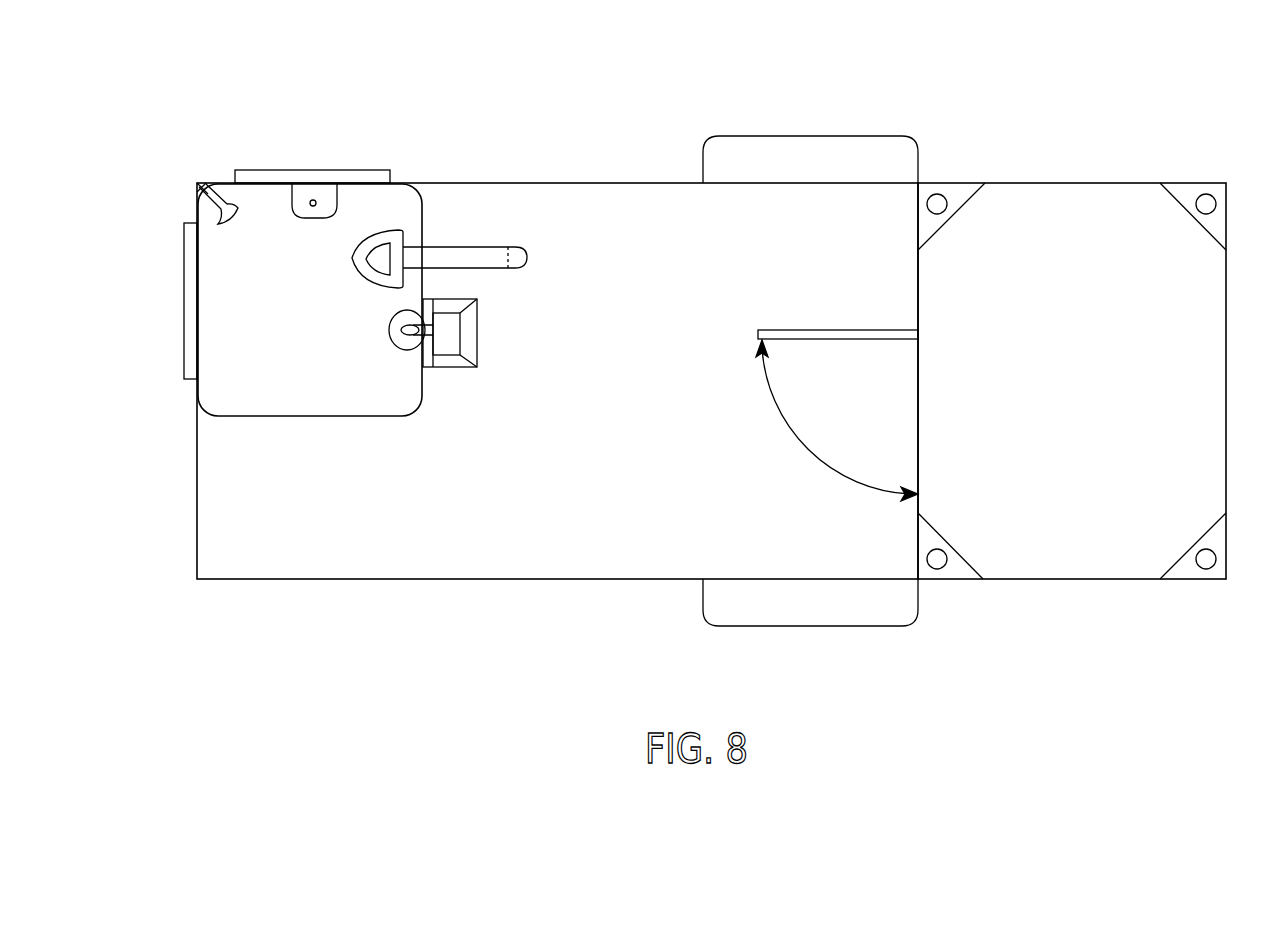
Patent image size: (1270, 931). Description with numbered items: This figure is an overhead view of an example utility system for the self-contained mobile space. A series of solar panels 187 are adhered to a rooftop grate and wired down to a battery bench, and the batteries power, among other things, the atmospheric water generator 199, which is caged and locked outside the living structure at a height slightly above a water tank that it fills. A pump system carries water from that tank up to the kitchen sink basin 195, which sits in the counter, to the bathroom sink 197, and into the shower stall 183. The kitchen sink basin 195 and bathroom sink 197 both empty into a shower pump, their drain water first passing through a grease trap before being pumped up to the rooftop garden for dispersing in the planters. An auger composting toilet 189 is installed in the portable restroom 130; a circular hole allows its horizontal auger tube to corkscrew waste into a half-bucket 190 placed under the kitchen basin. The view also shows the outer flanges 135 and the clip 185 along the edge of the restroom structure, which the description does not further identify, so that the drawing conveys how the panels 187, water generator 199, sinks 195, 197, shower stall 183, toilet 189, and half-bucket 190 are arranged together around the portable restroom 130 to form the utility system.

The portable restroom 130 is at (213, 183).
The flange 135 is at (803, 136).
The shower stall 183 is at (197, 183).
The clip 185 is at (298, 195).
The panels 187 is at (360, 175).
The auger composting toilet 189 is at (355, 272).
The half-bucket 190 is at (527, 257).
The kitchen sink basin 195 is at (477, 335).
The bathroom sink 197 is at (395, 340).
The atmospheric water generator 199 is at (1197, 170).